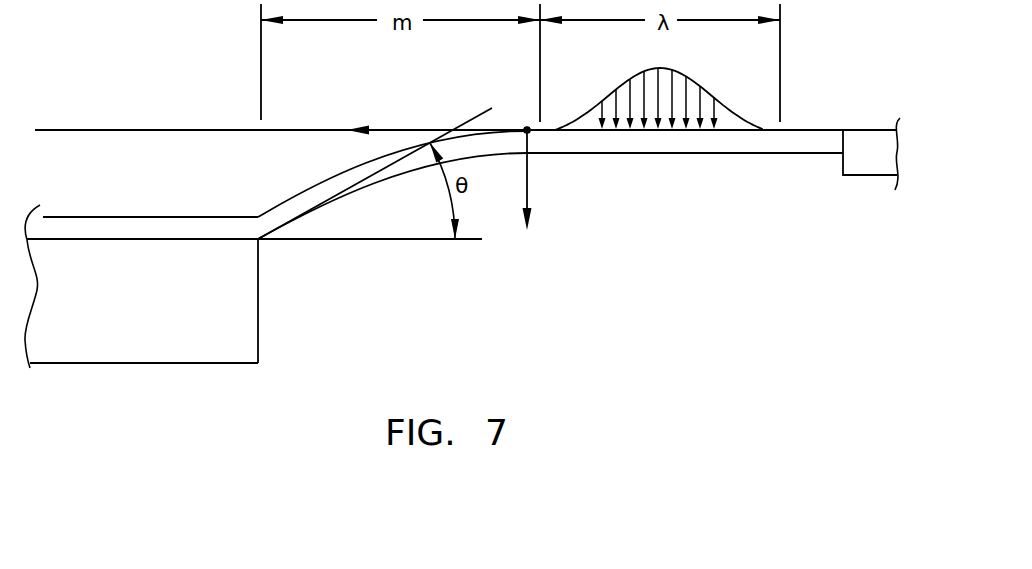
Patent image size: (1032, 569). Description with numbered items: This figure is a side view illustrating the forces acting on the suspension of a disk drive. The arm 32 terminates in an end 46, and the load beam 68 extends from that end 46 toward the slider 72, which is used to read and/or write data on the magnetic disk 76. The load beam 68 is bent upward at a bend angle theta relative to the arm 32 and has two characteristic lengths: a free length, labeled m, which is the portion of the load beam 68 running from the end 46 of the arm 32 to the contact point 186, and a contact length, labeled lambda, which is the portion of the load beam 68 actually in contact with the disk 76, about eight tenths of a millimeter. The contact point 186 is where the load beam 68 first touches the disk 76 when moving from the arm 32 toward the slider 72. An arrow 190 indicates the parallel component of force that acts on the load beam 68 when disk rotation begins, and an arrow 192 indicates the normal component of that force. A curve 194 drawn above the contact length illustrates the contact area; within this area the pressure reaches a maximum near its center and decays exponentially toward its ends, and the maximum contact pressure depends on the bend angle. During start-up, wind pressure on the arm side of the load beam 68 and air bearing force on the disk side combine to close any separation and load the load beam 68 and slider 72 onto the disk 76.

The arm 32 is at (108, 342).
The end 46 is at (260, 307).
The load beam 68 is at (137, 216).
The slider 72 is at (872, 175).
The magnetic disk 76 is at (150, 128).
The contact point 186 is at (527, 130).
The arrow 190 is at (402, 128).
The arrow 192 is at (528, 176).
The curve 194 is at (707, 77).